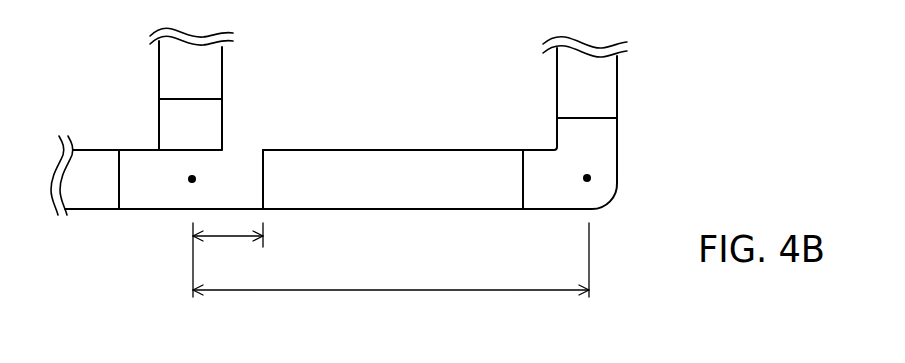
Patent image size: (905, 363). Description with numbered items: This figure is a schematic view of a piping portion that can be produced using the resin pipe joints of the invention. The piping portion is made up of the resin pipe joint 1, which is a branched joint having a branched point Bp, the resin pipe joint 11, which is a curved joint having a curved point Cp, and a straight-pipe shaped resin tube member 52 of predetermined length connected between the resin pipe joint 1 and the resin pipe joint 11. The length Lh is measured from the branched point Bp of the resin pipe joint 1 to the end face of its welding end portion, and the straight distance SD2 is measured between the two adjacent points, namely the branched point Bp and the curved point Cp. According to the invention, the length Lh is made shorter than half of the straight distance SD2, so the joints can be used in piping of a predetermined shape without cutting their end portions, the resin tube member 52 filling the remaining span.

The resin pipe joint 1 is at (148, 150).
The straight-pipe shaped resin tube member 52 is at (423, 150).
The resin pipe joint 11 is at (557, 128).
The branched point Bp is at (192, 179).
The curved point Cp is at (587, 178).
The length Lh is at (228, 260).
The straight distance SD2 is at (391, 278).